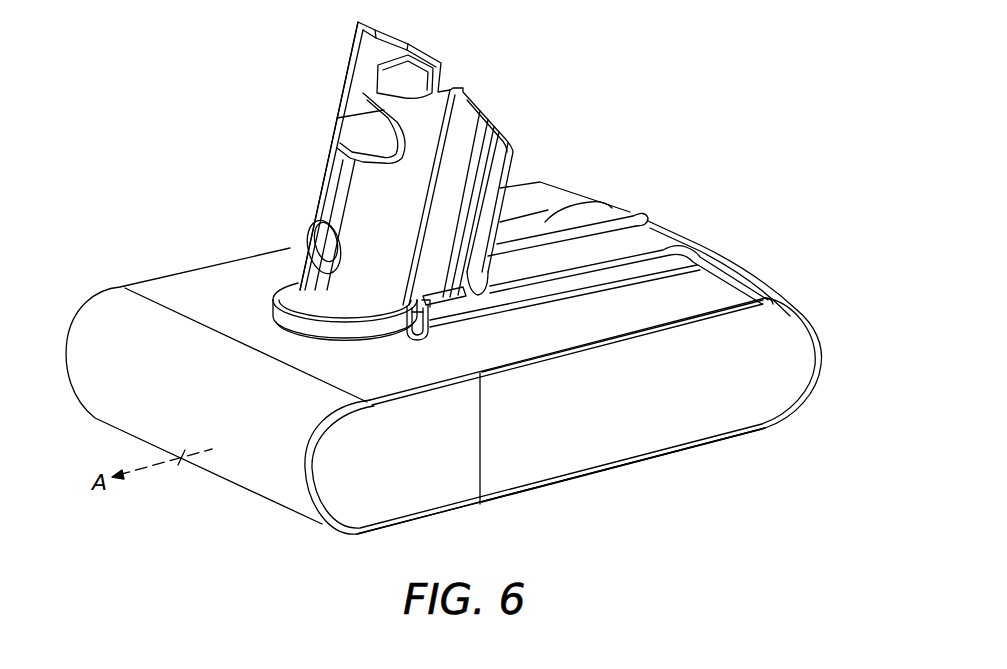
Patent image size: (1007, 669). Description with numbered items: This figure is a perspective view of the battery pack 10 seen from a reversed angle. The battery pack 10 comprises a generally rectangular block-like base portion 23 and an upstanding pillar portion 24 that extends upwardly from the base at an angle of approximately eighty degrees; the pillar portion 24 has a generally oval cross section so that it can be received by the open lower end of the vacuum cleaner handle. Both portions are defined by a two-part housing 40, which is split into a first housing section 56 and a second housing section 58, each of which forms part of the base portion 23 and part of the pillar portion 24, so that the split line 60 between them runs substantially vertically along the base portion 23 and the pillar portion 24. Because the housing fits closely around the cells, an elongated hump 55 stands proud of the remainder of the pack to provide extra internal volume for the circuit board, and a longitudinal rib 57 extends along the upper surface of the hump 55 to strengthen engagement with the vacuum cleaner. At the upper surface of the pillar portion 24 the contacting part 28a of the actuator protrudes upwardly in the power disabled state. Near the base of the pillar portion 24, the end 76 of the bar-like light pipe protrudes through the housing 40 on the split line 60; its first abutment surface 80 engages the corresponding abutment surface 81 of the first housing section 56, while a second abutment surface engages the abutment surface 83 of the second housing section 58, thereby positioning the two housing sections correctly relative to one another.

The battery pack 10 is at (765, 132).
The base portion 23 is at (813, 302).
The pillar portion 24 is at (312, 195).
The contacting part 28a is at (403, 92).
The two-part housing 40 is at (604, 474).
The hump 55 is at (600, 205).
The first housing section 56 is at (700, 430).
The longitudinal rib 57 is at (637, 210).
The second housing section 58 is at (422, 505).
The split line 60 is at (421, 226).
The first end of light pipe 76 is at (418, 336).
The first abutment surface 80 is at (436, 314).
The abutment surface of first housing section 81 is at (428, 332).
The abutment surface of second housing section 83 is at (410, 338).